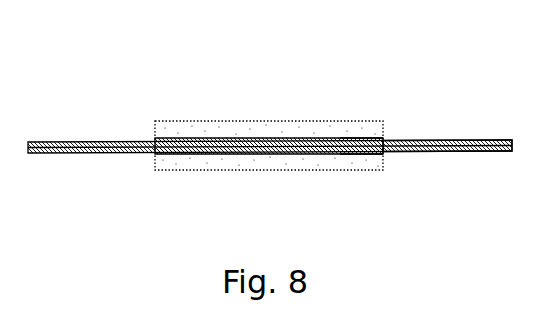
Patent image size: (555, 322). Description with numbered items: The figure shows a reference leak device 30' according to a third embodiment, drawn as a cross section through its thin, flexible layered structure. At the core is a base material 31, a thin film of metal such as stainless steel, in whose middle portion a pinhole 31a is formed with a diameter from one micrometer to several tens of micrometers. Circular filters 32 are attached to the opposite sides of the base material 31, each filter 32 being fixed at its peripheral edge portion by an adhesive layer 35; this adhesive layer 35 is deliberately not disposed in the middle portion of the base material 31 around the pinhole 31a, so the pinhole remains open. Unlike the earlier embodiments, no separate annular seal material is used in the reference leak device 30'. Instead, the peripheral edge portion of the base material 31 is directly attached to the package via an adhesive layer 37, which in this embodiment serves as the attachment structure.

The reference leak device 30' is at (458, 69).
The base material 31 is at (405, 150).
The pinhole 31a is at (271, 138).
The filter 32 is at (300, 134).
The adhesive layer 35 is at (357, 148).
The adhesive layer 37 is at (472, 150).